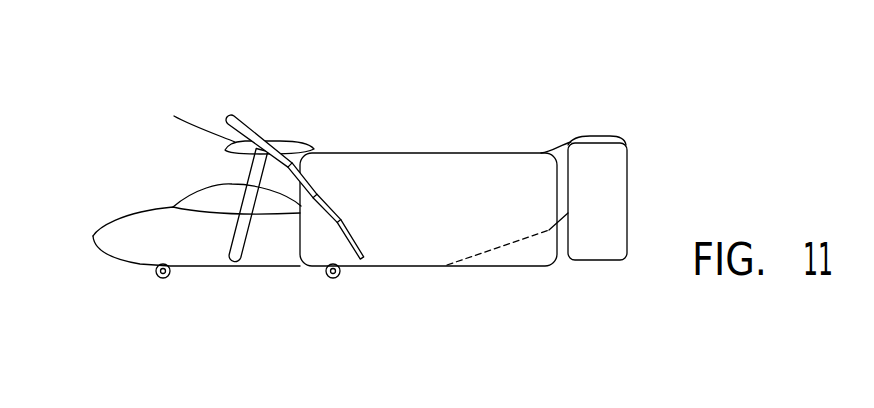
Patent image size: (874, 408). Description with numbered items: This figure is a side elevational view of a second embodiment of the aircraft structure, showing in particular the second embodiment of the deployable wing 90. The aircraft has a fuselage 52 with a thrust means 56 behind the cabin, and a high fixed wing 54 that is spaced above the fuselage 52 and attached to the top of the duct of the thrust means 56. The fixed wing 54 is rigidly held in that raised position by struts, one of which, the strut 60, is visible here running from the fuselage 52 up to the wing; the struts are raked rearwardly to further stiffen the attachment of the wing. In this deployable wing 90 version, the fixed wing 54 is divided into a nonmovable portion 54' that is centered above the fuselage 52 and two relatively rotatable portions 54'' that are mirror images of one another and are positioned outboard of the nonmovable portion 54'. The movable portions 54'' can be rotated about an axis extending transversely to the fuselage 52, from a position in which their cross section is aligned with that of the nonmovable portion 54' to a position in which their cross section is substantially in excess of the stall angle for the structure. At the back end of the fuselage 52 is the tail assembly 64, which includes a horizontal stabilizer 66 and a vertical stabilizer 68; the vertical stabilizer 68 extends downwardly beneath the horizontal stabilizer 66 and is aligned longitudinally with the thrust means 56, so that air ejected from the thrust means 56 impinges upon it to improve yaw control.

The fuselage 52 is at (200, 247).
The high fixed wing 54 is at (288, 98).
The nonmovable portion 54' is at (176, 105).
The relatively rotatable portions 54'' is at (293, 137).
The thrust means 56 is at (433, 243).
The strut 60 is at (242, 242).
The tail assembly 64 is at (607, 188).
The horizontal stabilizer 66 is at (600, 137).
The vertical stabilizer 68 is at (615, 219).
The deployable wing 90 is at (311, 172).